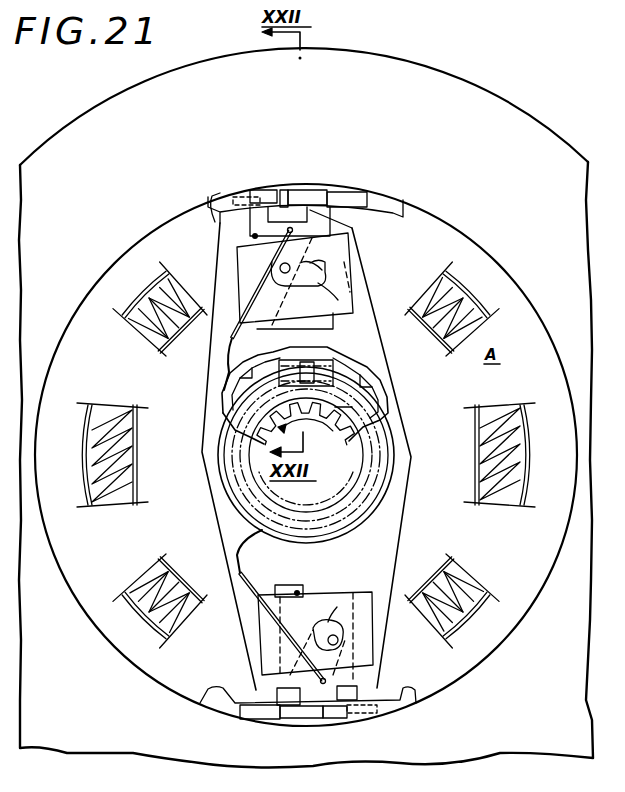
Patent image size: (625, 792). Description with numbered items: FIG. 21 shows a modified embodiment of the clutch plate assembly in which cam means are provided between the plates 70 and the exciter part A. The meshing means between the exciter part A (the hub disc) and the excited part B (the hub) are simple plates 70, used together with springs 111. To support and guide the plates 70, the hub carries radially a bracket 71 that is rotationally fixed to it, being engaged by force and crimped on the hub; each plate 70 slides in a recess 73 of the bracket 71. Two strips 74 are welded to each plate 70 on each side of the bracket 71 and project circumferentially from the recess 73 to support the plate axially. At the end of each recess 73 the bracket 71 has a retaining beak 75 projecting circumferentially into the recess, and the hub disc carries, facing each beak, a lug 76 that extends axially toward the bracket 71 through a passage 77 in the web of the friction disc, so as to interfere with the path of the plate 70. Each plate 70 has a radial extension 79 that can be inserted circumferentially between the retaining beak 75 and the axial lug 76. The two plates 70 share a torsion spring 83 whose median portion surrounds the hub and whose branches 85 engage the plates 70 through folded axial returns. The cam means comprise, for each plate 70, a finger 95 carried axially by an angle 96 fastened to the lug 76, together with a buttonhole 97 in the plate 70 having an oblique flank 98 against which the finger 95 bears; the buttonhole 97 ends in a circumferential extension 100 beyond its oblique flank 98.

The plate 70 is at (328, 205).
The bracket 71 is at (358, 260).
The recess 73 is at (255, 236).
The strips 74 is at (347, 300).
The retaining beak 75 is at (253, 190).
The lug 76 is at (305, 190).
The passage 77 is at (398, 205).
The radial extension 79 is at (288, 190).
The torsion spring 83 is at (213, 440).
The branches 85 is at (224, 346).
The finger 95 is at (237, 258).
The angle 96 is at (293, 278).
The buttonhole 97 is at (318, 283).
The oblique flank 98 is at (300, 263).
The circumferential extension 100 is at (305, 268).
The springs 111 is at (295, 385).